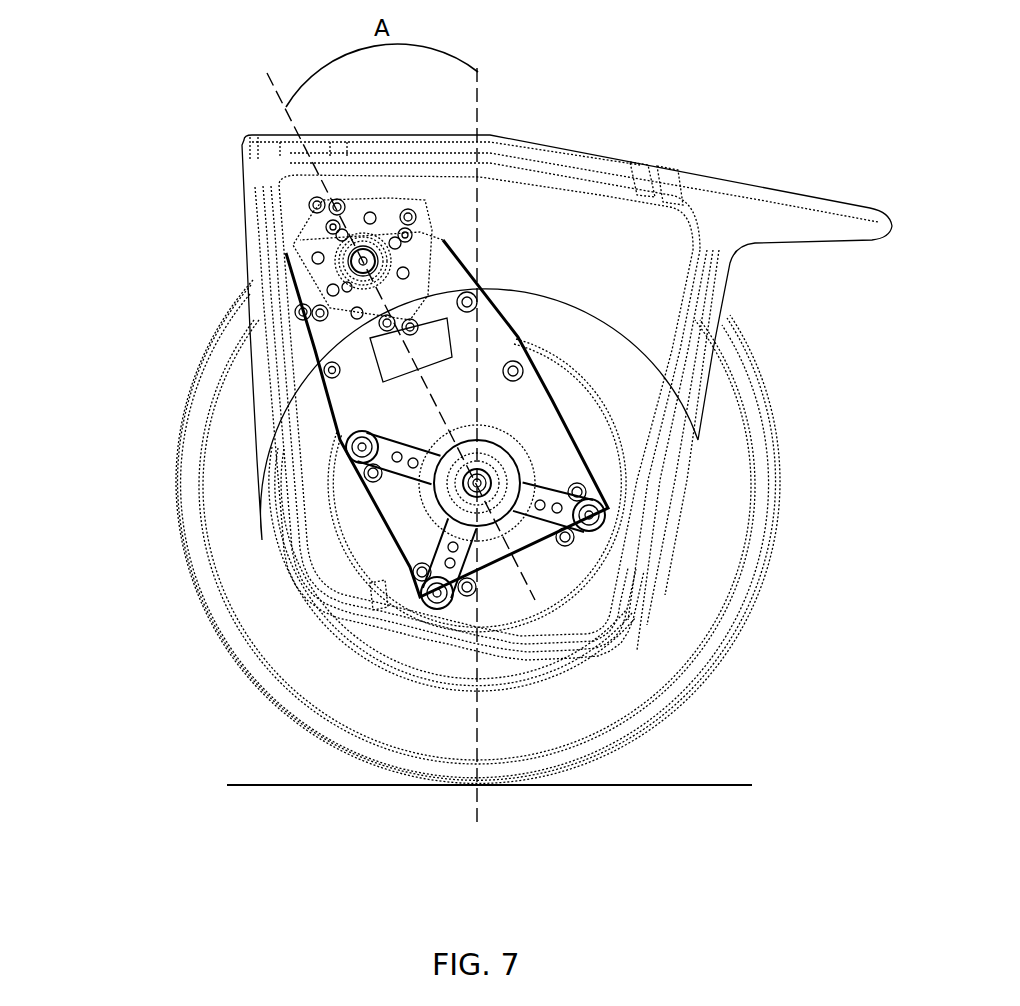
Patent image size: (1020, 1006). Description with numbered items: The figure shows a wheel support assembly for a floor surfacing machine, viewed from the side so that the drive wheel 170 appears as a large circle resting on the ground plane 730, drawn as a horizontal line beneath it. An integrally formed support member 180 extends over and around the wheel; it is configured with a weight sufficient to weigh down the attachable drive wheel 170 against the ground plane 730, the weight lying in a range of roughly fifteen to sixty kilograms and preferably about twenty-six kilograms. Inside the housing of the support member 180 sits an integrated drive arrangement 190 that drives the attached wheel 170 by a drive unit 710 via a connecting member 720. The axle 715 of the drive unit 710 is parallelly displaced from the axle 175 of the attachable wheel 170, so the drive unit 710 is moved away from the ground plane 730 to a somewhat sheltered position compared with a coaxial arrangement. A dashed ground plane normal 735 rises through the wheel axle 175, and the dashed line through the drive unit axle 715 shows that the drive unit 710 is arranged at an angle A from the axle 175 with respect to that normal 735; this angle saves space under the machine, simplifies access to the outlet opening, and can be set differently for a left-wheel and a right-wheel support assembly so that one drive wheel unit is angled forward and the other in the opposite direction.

The drive wheel 170 is at (730, 522).
The axle of the attachable wheel 175 is at (478, 483).
The support member 180 is at (790, 208).
The integrated drive arrangement 190 is at (229, 328).
The drive unit 710 is at (302, 266).
The axle of the drive unit 715 is at (367, 263).
The connecting member 720 is at (352, 403).
The ground plane 730 is at (476, 766).
The ground plane normal 735 is at (478, 120).